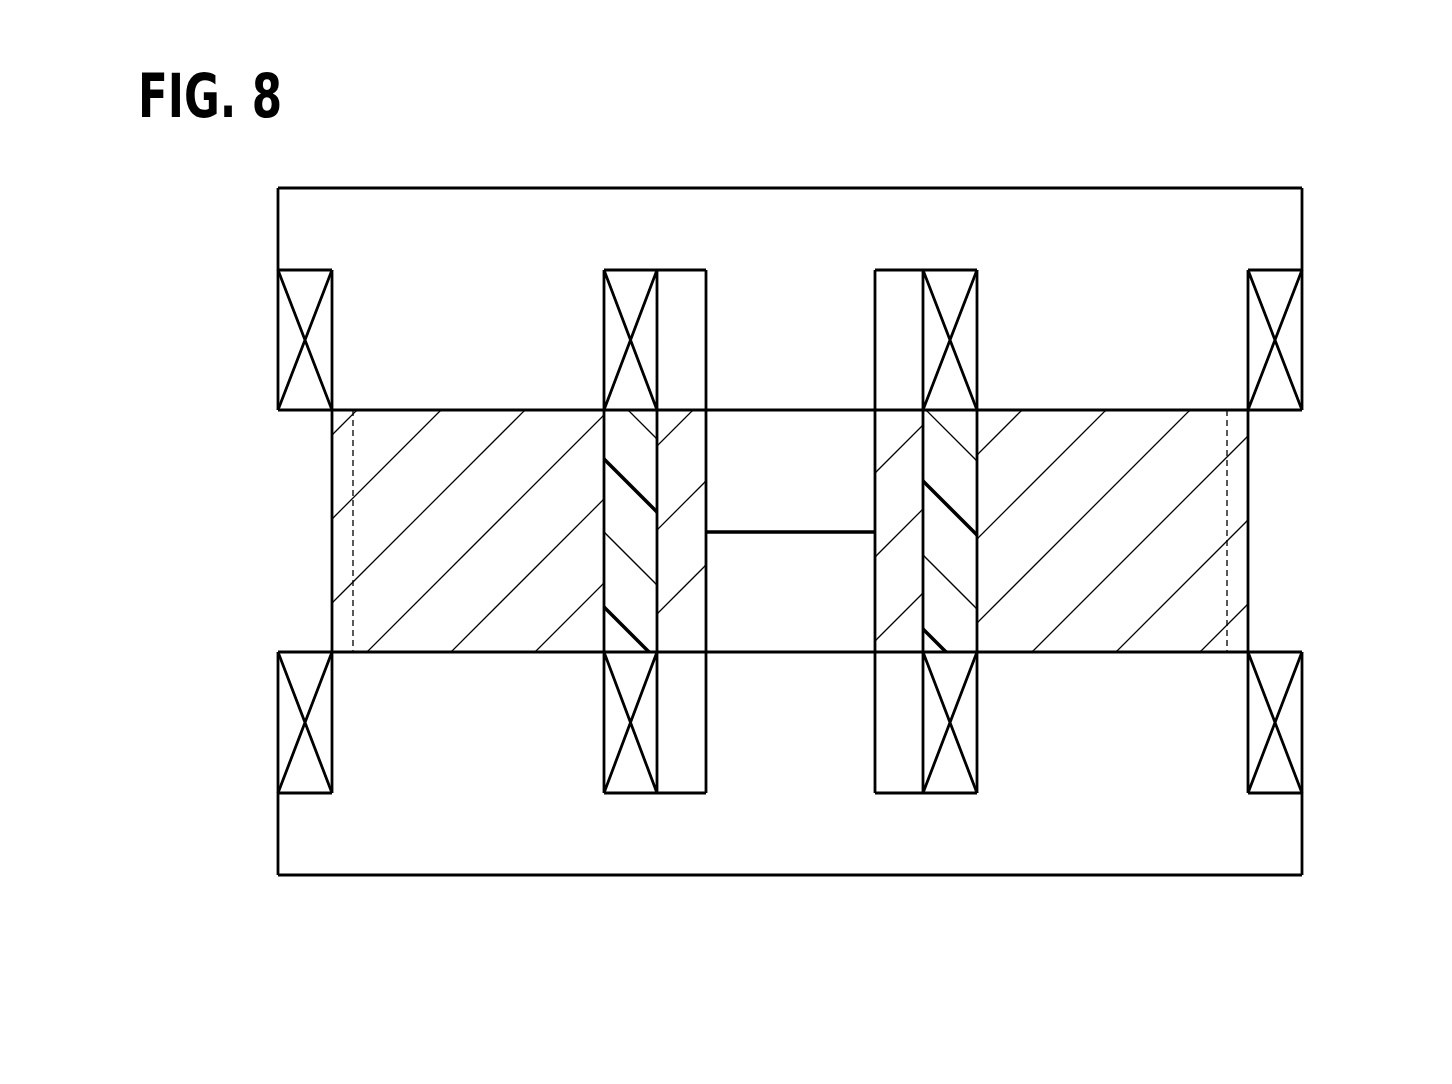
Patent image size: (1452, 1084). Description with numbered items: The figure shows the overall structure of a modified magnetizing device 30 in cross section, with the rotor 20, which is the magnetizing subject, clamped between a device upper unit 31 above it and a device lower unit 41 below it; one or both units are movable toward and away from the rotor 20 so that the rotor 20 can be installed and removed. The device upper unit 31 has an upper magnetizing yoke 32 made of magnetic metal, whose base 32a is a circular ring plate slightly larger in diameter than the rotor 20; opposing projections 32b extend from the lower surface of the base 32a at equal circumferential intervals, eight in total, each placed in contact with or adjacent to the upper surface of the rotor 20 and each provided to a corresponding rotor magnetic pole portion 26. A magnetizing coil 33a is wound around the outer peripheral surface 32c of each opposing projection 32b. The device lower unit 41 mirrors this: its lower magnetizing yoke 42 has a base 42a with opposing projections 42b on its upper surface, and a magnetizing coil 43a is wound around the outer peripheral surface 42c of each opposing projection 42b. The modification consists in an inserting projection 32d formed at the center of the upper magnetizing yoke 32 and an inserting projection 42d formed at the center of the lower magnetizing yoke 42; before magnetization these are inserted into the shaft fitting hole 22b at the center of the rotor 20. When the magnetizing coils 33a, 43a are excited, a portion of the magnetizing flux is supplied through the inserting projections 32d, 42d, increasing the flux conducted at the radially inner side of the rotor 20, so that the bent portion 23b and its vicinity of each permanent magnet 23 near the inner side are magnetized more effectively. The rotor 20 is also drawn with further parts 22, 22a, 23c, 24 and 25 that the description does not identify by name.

The rotor 20 is at (1252, 464).
The coil 22 is at (903, 410).
The outer side surface of coil 22a is at (332, 480).
The shaft fitting hole 22b is at (875, 440).
The permanent magnet 23 is at (604, 402).
The bent portion 23b is at (957, 408).
The outer insulating portion 23c is at (352, 557).
The adhesive layer 24 is at (660, 548).
The insulating sheet 25 is at (513, 410).
The rotor magnetic pole portion 26 is at (600, 361).
The magnetizing device 30 is at (1317, 129).
The device upper unit 31 is at (1305, 223).
The upper magnetizing yoke 32 is at (1165, 188).
The base 32a is at (1090, 190).
The opposing projection 32b is at (465, 410).
The outer peripheral surface 32c is at (334, 341).
The inserting projection 32d is at (804, 533).
The magnetizing coil 33a is at (280, 338).
The device lower unit 41 is at (1305, 815).
The lower magnetizing yoke 42 is at (1192, 876).
The base 42a is at (1078, 876).
The opposing projection 42b is at (434, 655).
The outer peripheral surface 42c is at (334, 733).
The inserting projection 42d is at (778, 534).
The magnetizing coil 43a is at (280, 720).